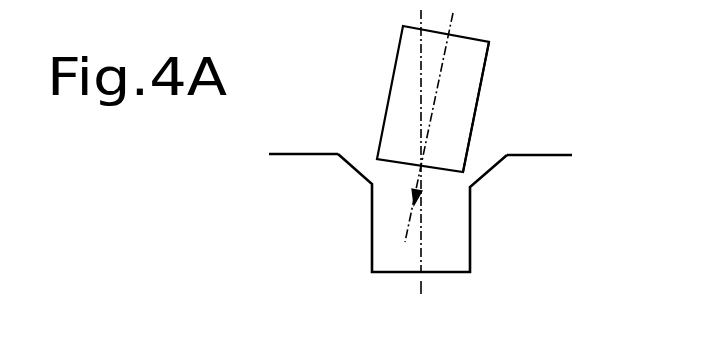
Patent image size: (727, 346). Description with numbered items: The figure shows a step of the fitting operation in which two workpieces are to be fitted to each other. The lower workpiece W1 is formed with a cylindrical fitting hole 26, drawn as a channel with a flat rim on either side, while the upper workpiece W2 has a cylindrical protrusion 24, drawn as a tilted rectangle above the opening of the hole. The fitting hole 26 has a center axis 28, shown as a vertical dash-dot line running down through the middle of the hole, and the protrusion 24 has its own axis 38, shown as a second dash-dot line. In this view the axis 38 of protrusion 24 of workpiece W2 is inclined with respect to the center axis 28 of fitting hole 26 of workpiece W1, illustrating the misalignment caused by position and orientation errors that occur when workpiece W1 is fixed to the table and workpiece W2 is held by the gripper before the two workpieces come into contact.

The cylindrical protrusion 24 is at (398, 96).
The cylindrical fitting hole 26 is at (459, 242).
The center axis 28 is at (423, 287).
The axis of protrusion 38 is at (453, 25).
The workpiece W1 is at (535, 165).
The workpiece W2 is at (463, 83).